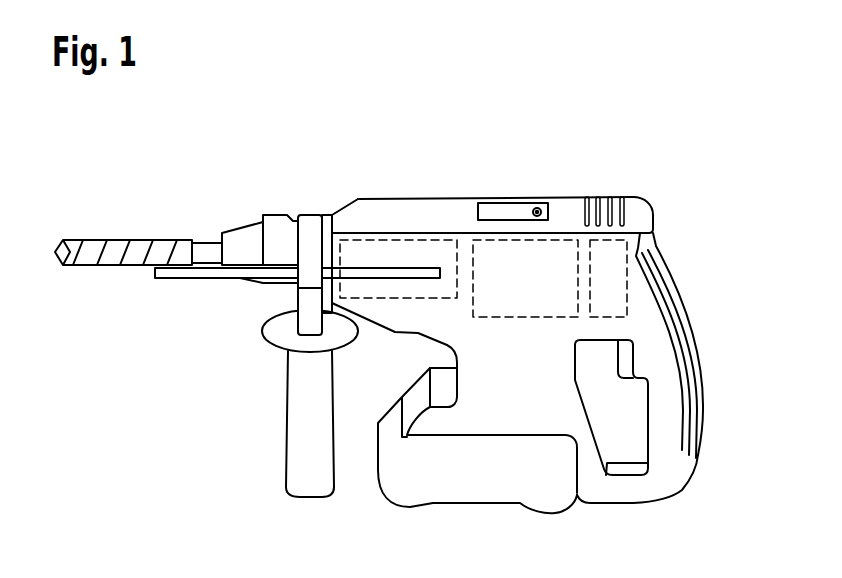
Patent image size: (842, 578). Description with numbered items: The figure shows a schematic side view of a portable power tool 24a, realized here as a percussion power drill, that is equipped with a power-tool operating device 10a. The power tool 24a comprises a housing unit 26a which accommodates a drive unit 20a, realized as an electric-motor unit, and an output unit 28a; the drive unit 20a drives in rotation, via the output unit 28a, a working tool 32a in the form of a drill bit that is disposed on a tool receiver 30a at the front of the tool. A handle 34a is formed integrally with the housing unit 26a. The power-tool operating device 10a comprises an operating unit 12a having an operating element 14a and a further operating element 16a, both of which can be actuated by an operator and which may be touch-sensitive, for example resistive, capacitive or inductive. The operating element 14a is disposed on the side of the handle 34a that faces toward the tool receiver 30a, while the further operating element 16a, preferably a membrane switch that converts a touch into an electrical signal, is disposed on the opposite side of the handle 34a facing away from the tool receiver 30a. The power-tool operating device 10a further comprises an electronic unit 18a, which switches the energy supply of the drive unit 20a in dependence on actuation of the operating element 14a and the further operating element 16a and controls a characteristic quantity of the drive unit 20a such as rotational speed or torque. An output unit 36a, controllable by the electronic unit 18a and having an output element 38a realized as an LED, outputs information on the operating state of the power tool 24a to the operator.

The power-tool operating device 10a is at (665, 147).
The operating unit 12a is at (662, 202).
The operating element 14a is at (627, 362).
The further operating element 16a is at (673, 292).
The electronic unit 18a is at (624, 250).
The drive unit 20a is at (480, 257).
The power tool 24a is at (207, 162).
The housing unit 26a is at (352, 195).
The output unit 28a is at (382, 250).
The tool receiver 30a is at (243, 240).
The working tool 32a is at (147, 252).
The handle 34a is at (667, 460).
The output unit 36a is at (497, 213).
The output element 38a is at (537, 208).